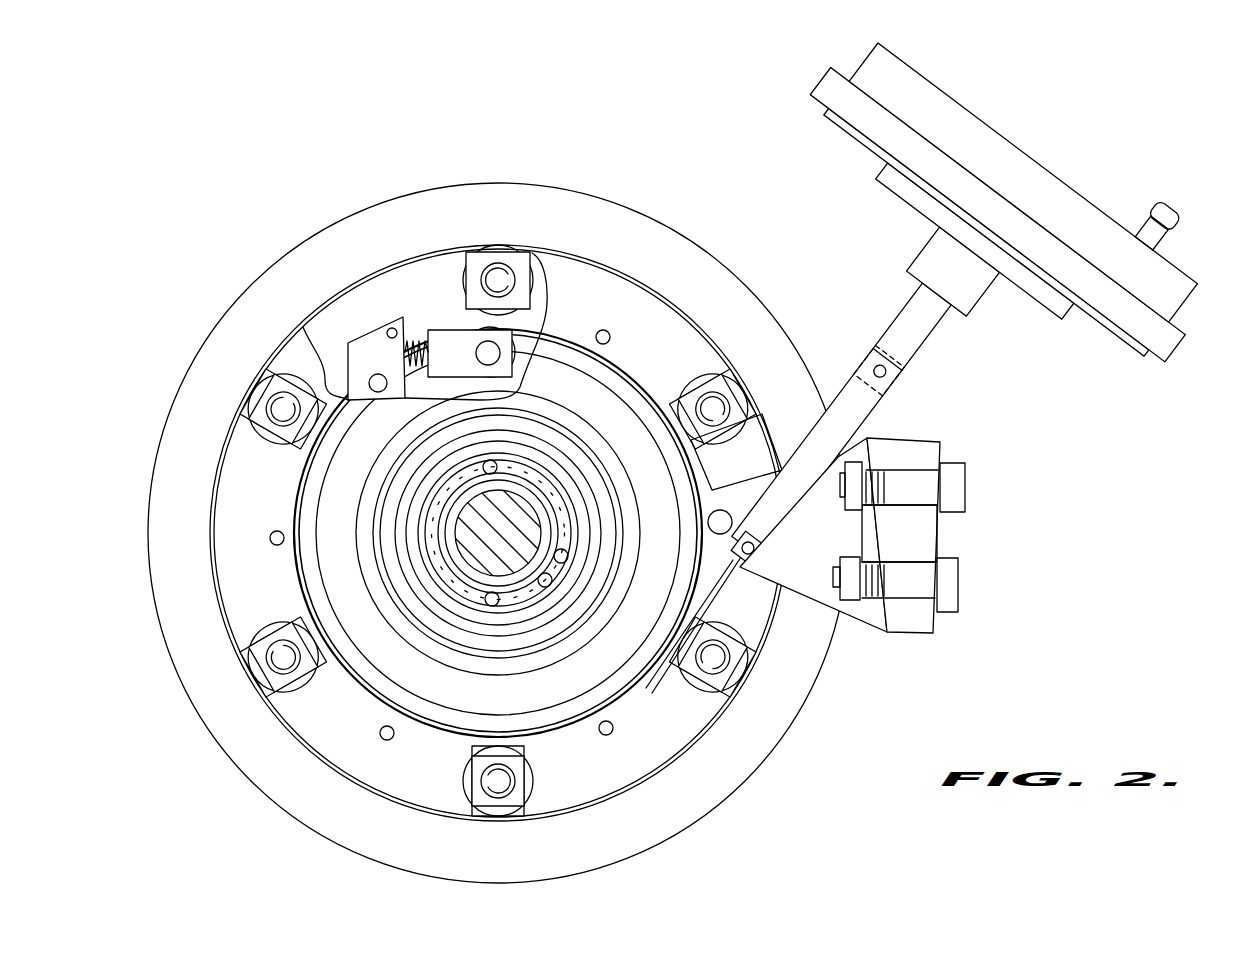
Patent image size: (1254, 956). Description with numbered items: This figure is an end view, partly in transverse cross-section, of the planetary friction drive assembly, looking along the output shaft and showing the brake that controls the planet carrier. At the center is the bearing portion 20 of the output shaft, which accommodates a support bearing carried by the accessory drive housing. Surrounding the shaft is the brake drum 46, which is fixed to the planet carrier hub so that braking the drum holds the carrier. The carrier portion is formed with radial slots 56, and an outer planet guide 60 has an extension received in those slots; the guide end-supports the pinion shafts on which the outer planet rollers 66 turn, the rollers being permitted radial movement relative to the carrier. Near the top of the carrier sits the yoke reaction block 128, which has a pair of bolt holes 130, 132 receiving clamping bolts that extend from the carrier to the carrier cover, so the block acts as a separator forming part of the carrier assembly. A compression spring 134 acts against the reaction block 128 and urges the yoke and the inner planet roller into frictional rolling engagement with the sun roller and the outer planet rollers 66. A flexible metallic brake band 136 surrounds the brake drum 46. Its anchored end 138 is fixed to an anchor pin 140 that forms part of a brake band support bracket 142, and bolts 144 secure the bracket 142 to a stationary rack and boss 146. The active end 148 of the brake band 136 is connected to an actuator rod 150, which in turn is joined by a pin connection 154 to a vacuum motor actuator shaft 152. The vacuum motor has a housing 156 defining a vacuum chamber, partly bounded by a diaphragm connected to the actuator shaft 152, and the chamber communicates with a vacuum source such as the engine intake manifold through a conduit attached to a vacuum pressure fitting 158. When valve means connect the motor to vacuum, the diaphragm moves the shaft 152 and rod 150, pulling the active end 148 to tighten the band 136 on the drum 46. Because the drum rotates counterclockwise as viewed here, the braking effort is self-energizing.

The bearing portion 20 is at (512, 542).
The brake drum 46 is at (634, 676).
The radial slots 56 is at (278, 640).
The outer planet guide 60 is at (522, 783).
The outer planet rollers 66 is at (497, 816).
The yoke reaction block 128 is at (387, 343).
The bolt hole 130 is at (378, 393).
The bolt hole 132 is at (397, 328).
The compression spring 134 is at (455, 312).
The brake band 136 is at (598, 725).
The anchored end of brake band 138 is at (738, 505).
The anchor pin 140 is at (718, 524).
The brake band support bracket 142 is at (812, 595).
The bolts 144 is at (955, 580).
The stationary rack and boss 146 is at (928, 514).
The active end of brake band 148 is at (758, 548).
The actuator rod 150 is at (834, 463).
The vacuum motor actuator shaft 152 is at (926, 352).
The pin connection 154 is at (895, 380).
The vacuum motor housing 156 is at (896, 140).
The vacuum pressure fitting 158 is at (1172, 212).